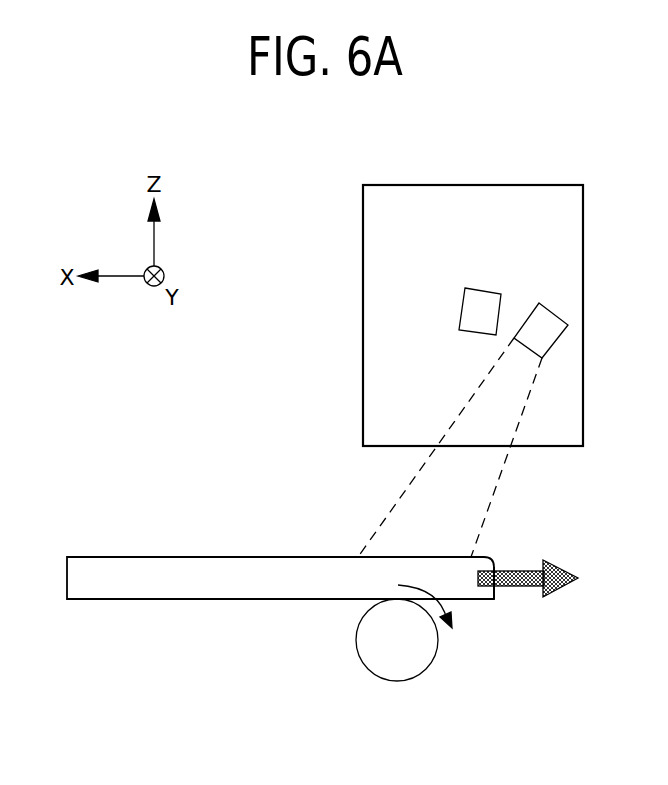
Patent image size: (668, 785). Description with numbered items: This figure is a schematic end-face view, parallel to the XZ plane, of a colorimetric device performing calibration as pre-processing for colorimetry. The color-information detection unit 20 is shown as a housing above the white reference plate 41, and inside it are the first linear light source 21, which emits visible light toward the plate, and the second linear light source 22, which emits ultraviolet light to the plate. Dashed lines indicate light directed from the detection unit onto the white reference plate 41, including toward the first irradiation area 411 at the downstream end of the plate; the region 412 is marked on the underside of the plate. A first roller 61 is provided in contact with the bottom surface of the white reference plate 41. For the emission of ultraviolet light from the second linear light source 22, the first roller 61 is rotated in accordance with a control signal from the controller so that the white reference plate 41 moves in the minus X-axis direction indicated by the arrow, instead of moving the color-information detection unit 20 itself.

The color-information detection unit 20 is at (500, 185).
The first linear light source 21 is at (555, 312).
The second linear light source 22 is at (485, 290).
The white reference plate 41 is at (128, 557).
The first irradiation area 411 is at (470, 602).
The belt lower surface 412 is at (113, 600).
The first roller 61 is at (398, 682).